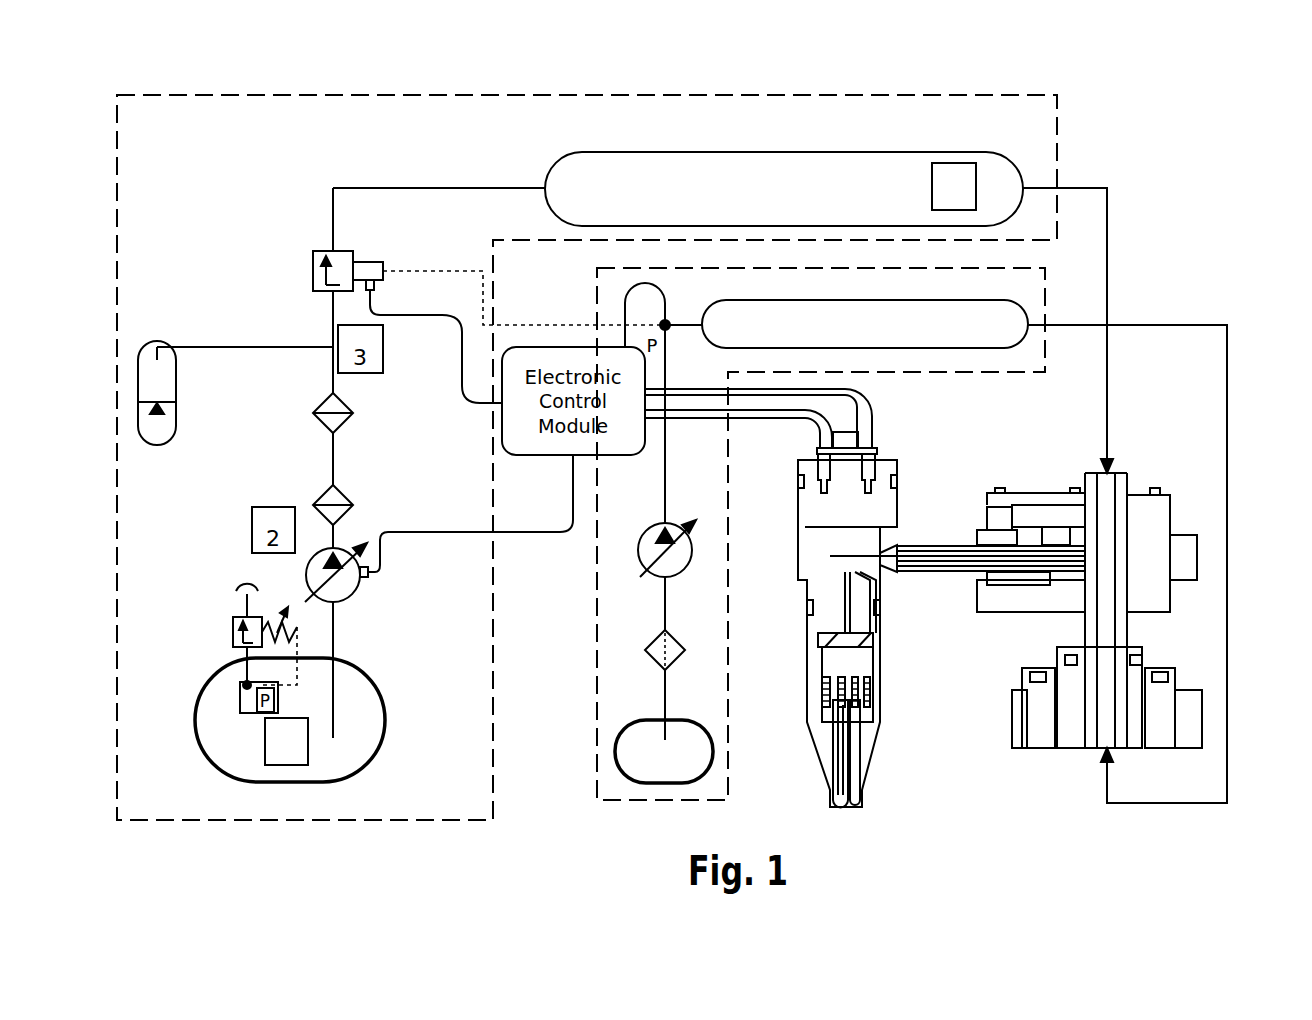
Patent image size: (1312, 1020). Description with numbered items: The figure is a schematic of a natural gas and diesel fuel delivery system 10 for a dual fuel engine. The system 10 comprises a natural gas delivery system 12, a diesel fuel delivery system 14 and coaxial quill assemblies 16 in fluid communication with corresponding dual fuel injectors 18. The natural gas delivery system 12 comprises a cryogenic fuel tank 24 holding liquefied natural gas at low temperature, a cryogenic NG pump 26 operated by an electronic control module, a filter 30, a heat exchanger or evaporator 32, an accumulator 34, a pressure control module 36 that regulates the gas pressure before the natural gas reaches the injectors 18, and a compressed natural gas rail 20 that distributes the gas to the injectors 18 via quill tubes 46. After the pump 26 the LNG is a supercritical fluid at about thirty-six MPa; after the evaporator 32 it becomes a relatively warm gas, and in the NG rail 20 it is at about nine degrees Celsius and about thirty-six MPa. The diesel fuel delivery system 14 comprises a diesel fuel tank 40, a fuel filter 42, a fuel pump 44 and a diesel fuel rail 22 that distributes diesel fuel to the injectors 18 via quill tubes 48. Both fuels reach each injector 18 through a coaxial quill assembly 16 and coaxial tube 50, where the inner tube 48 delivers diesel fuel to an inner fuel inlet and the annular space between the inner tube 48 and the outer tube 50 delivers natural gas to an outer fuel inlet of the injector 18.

The natural gas and diesel fuel delivery system 10 is at (1216, 133).
The natural gas delivery system 12 is at (493, 598).
The diesel fuel delivery system 14 is at (597, 668).
The coaxial quill assembly 16 is at (1037, 612).
The dual fuel injector 18 is at (880, 677).
The NG rail 20 is at (955, 152).
The diesel fuel rail 22 is at (978, 348).
The cryogenic fuel tank 24 is at (196, 695).
The cryogenic NG pump 26 is at (306, 570).
The filter 30 is at (318, 492).
The heat exchanger or evaporator 32 is at (353, 412).
The accumulator 34 is at (150, 358).
The pressure control module 36 is at (313, 270).
The diesel fuel tank 40 is at (713, 758).
The fuel filter 42 is at (683, 660).
The fuel pump 44 is at (688, 572).
The quill tube (coaxial tube) 46 is at (920, 543).
The inner tube (quill tube) 48 is at (912, 572).
The outer tube (coaxial tube) 50 is at (940, 572).